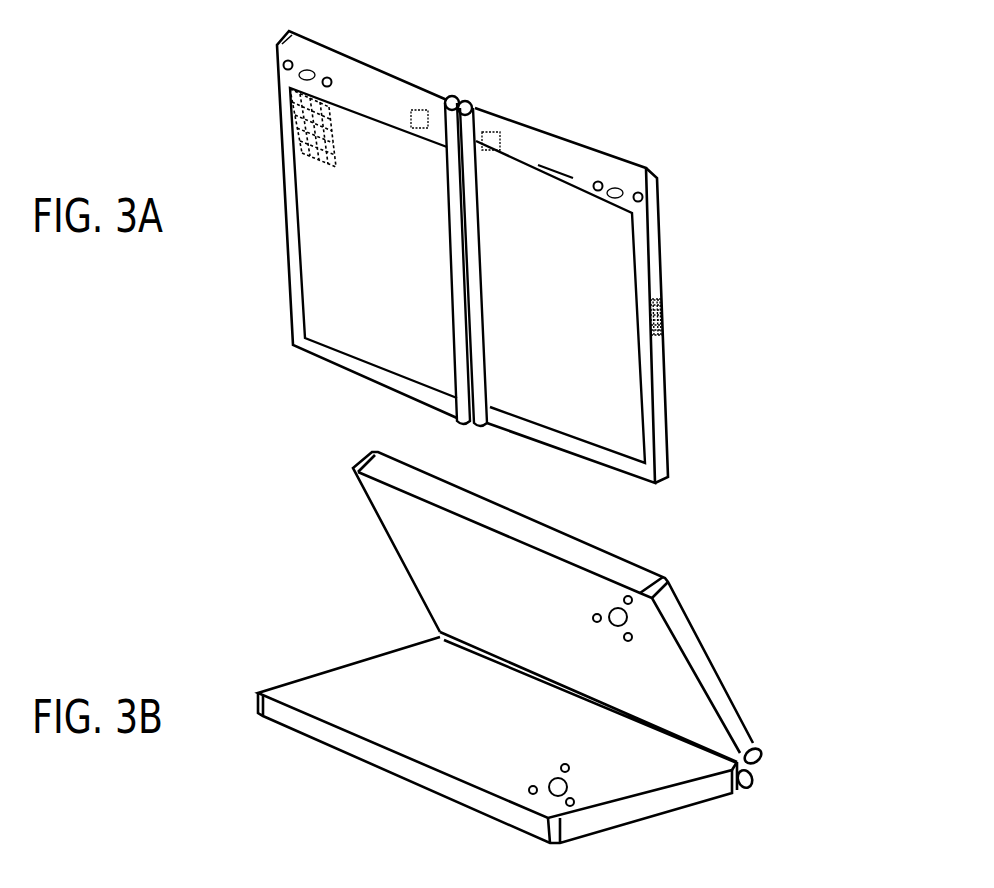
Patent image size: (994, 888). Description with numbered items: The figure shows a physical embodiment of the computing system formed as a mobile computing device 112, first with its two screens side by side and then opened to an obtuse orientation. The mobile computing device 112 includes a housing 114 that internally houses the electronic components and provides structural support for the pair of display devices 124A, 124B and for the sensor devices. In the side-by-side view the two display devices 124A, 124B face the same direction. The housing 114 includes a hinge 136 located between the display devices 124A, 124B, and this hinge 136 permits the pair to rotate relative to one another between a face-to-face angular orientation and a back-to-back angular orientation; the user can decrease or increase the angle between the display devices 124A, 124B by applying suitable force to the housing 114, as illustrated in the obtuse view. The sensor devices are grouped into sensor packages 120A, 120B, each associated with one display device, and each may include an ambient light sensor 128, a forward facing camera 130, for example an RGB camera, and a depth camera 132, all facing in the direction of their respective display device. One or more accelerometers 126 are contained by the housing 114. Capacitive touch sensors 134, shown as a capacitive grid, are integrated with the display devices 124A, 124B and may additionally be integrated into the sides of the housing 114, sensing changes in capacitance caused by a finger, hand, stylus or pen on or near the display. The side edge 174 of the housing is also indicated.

The mobile computing device 112 is at (487, 243).
The housing 114 is at (545, 132).
The sensor package 120A is at (577, 265).
The sensor package 120B is at (432, 211).
The display device 124A is at (583, 416).
The display device 124B is at (403, 355).
The accelerometer 126 is at (428, 110).
The ambient light sensor 128 is at (284, 64).
The forward facing camera 130 is at (302, 75).
The depth camera 132 is at (325, 79).
The capacitive touch sensor 134 is at (307, 135).
The hinge 136 is at (463, 258).
The side surface 174 is at (652, 263).